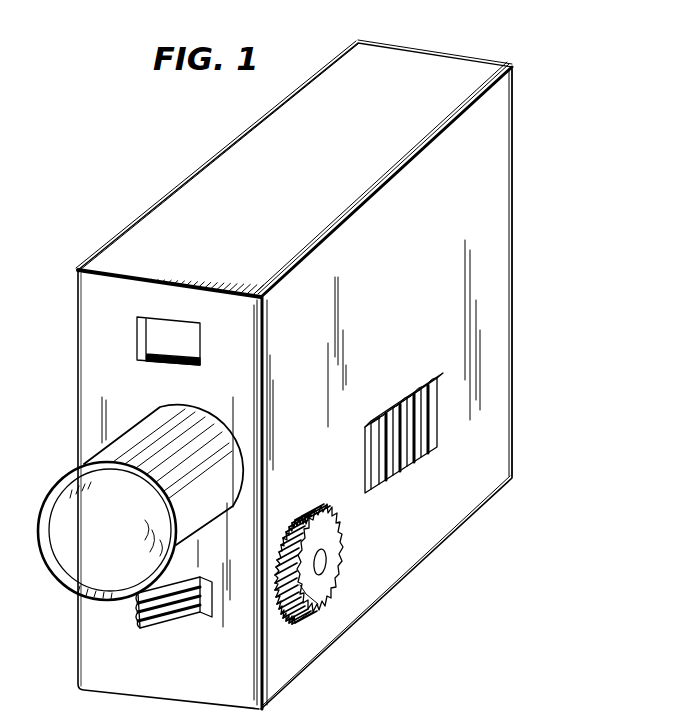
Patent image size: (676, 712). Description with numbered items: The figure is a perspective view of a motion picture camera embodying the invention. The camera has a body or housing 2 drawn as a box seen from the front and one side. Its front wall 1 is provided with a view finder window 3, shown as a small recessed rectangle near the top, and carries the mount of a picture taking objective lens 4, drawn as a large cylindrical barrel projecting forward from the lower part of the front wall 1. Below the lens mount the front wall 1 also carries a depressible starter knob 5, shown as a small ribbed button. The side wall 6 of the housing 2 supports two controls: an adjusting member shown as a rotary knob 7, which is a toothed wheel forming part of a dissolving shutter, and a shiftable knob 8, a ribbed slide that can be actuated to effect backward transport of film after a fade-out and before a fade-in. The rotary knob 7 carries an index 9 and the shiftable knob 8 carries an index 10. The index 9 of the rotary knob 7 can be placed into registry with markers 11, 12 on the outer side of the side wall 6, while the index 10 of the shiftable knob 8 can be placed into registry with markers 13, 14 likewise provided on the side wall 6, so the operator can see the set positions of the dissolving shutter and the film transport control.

The front wall 1 is at (79, 399).
The body or housing 2 is at (216, 156).
The view finder window 3 is at (137, 328).
The picture taking objective lens 4 is at (70, 500).
The depressible starter knob 5 is at (162, 620).
The side wall 6 is at (497, 247).
The rotary knob 7 is at (330, 545).
The shiftable knob 8 is at (402, 470).
The index 9 is at (318, 588).
The index 10 is at (371, 436).
The marker 11 is at (306, 612).
The marker 12 is at (302, 482).
The marker 13 is at (378, 405).
The marker 14 is at (400, 376).